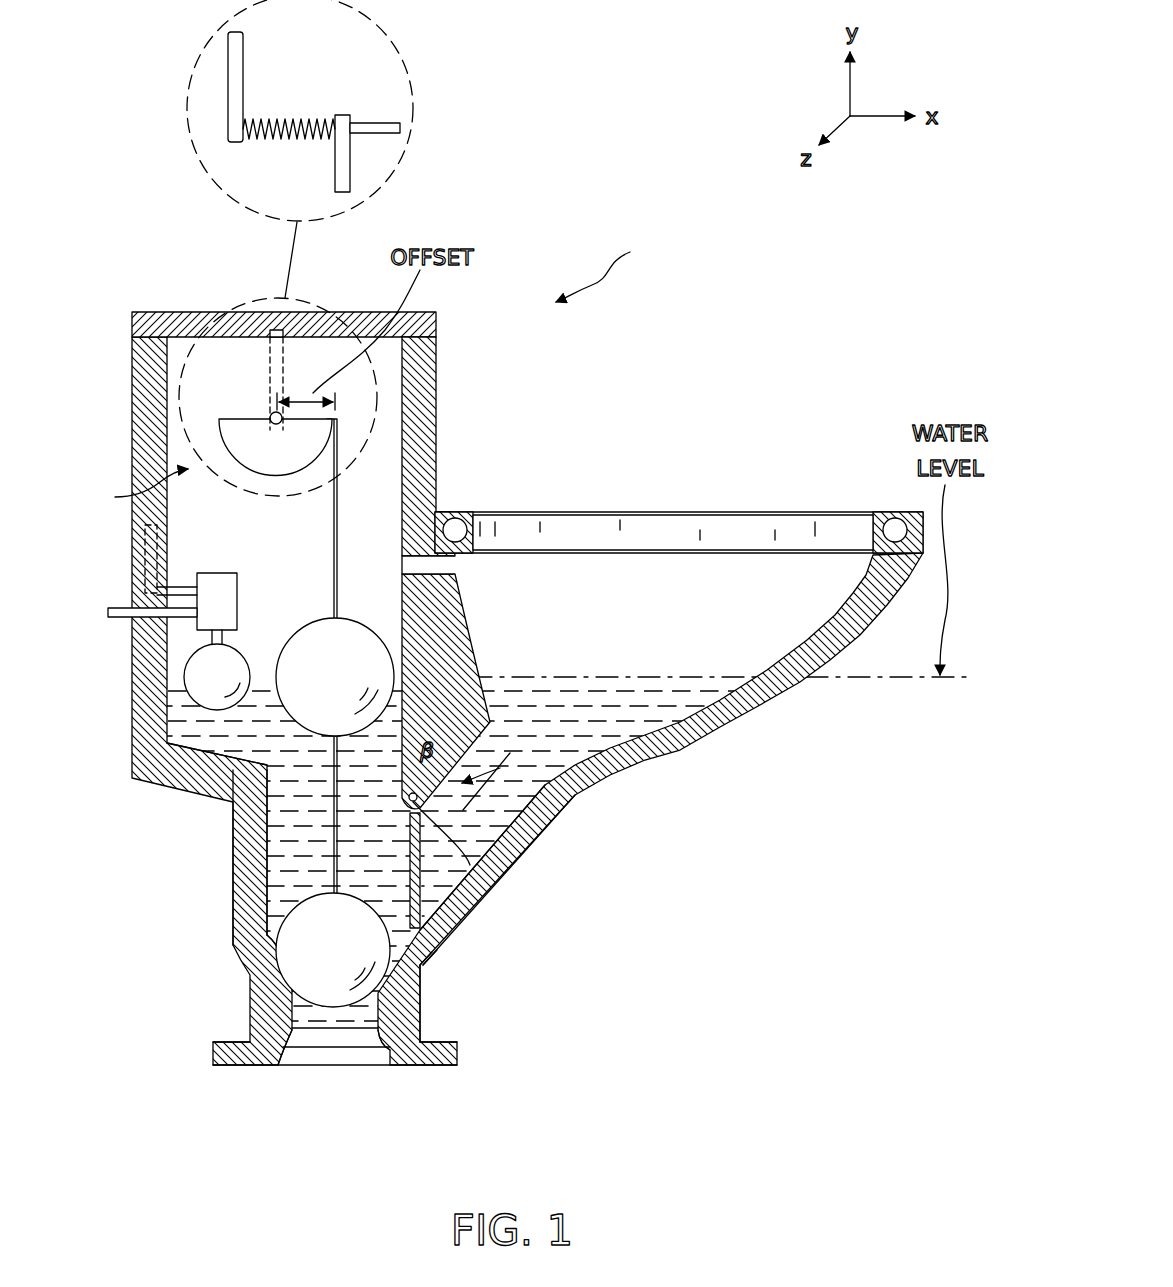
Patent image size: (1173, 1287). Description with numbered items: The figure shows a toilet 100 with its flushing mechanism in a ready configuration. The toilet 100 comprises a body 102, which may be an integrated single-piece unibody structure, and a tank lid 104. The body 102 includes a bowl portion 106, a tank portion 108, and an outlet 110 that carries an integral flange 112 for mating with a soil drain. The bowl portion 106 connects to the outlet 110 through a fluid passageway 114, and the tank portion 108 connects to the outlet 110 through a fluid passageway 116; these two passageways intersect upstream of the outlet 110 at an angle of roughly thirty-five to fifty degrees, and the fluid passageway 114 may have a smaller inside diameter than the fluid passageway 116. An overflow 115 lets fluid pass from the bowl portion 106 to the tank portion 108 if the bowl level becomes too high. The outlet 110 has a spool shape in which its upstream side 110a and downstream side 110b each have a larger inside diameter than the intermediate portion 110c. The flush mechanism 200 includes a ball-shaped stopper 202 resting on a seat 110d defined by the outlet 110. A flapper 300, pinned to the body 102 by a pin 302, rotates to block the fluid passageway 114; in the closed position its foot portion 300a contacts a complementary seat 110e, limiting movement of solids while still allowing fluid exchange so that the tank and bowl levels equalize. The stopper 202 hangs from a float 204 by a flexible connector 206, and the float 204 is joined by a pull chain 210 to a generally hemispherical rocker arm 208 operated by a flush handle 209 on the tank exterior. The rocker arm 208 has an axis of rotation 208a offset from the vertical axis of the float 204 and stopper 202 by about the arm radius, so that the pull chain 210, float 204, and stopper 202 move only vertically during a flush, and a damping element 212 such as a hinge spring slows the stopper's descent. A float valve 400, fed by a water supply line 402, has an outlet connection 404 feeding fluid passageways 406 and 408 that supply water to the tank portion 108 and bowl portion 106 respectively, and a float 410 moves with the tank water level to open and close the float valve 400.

The toilet 100 is at (617, 269).
The body 102 is at (132, 440).
The tank lid 104 is at (205, 312).
The bowl portion 106 is at (790, 650).
The tank portion 108 is at (436, 405).
The outlet 110 is at (250, 1000).
The upstream side 110a is at (273, 938).
The downstream side 110b is at (282, 1060).
The portion 110c is at (365, 1010).
The seat 110d is at (410, 1000).
The seat 110e is at (420, 970).
The integral flange 112 is at (445, 1065).
The fluid passageway 114 is at (470, 787).
The overflow 115 is at (452, 565).
The fluid passageway 116 is at (303, 792).
The flush mechanism 200 is at (126, 490).
The stopper 202 is at (335, 1007).
The float 204 is at (360, 620).
The connector 206 is at (330, 840).
The rocker arm 208 is at (273, 477).
The axis of rotation 208a is at (276, 415).
The flush handle 209 is at (228, 57).
The pull chain 210 is at (337, 547).
The damping element 212 is at (300, 117).
The flapper 300 is at (480, 900).
The foot portion 300a is at (437, 950).
The pin 302 is at (497, 867).
The float valve 400 is at (237, 597).
The water supply line 402 is at (118, 617).
The outlet connection 404 is at (145, 550).
The fluid passageway 406 is at (160, 533).
The fluid passageway 408 is at (458, 518).
The float 410 is at (190, 693).